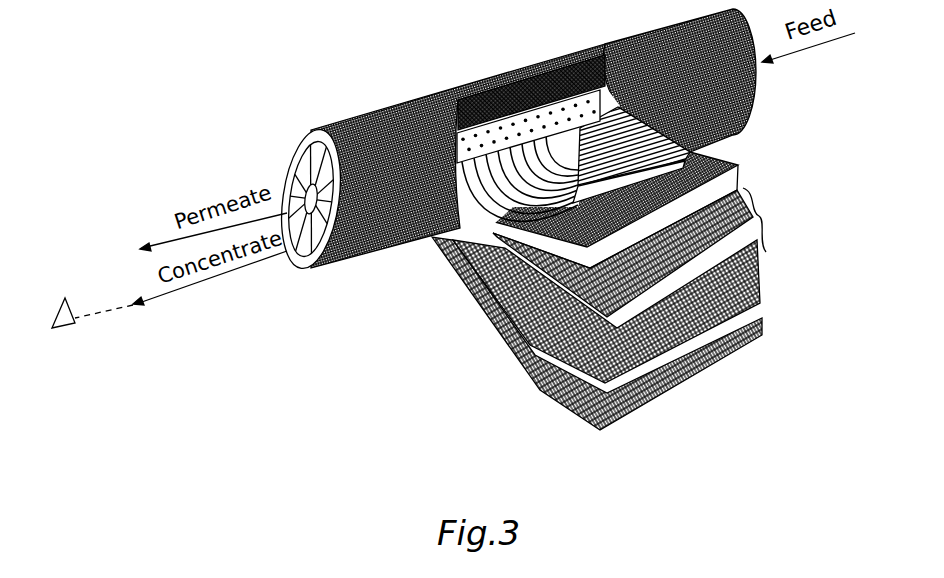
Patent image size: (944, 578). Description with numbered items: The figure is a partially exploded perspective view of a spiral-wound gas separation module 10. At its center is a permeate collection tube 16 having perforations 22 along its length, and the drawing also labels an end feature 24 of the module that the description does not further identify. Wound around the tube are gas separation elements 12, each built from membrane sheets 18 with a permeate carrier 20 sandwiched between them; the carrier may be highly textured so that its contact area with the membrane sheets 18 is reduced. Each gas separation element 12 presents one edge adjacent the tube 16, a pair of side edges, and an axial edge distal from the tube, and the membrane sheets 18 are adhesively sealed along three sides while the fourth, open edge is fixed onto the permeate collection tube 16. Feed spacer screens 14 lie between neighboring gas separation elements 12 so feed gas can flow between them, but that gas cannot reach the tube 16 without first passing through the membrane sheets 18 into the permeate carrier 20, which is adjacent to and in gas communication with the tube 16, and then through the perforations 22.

The gas separation module 10 is at (284, 350).
The gas separation element 12 is at (773, 214).
The feed spacer screen 14 is at (745, 160).
The permeate collection tube 16 is at (532, 80).
The membrane sheet 18 is at (445, 261).
The permeate carrier 20 is at (317, 119).
The perforations 22 is at (458, 97).
The end cap 24 is at (275, 146).